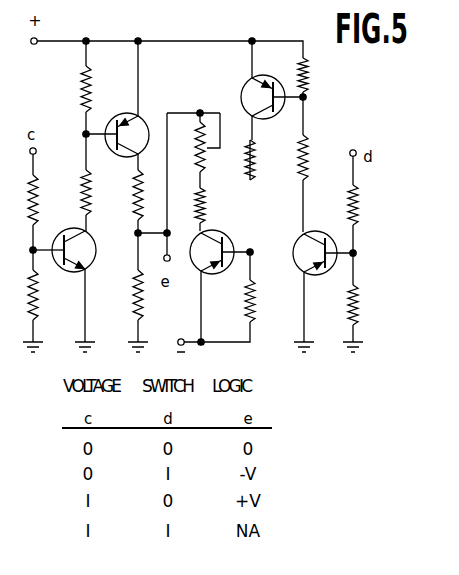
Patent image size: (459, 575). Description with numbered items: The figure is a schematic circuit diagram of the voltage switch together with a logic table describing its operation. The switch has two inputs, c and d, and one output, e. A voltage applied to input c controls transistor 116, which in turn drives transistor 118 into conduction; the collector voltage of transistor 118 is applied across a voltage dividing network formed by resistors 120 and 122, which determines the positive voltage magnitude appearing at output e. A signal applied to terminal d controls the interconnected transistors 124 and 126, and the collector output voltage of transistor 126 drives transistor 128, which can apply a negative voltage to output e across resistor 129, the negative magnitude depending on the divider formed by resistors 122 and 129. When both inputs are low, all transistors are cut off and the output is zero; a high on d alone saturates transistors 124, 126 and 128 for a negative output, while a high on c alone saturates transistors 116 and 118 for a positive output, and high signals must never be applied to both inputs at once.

The transistor 116 is at (94, 259).
The transistor 118 is at (135, 114).
The resistor 120 is at (133, 190).
The resistor 122 is at (133, 306).
The transistor 124 is at (300, 244).
The transistor 126 is at (246, 82).
The transistor 128 is at (217, 233).
The resistor 129 is at (208, 212).